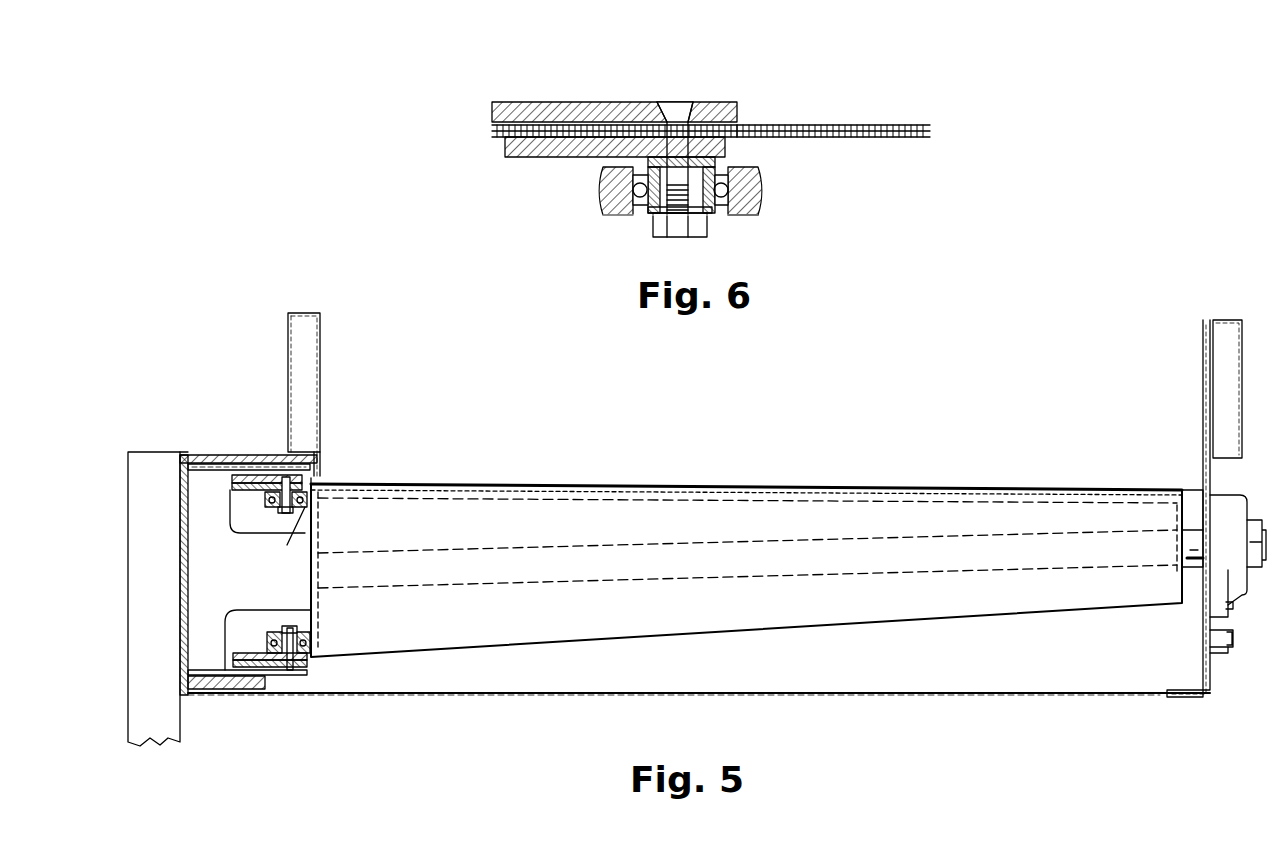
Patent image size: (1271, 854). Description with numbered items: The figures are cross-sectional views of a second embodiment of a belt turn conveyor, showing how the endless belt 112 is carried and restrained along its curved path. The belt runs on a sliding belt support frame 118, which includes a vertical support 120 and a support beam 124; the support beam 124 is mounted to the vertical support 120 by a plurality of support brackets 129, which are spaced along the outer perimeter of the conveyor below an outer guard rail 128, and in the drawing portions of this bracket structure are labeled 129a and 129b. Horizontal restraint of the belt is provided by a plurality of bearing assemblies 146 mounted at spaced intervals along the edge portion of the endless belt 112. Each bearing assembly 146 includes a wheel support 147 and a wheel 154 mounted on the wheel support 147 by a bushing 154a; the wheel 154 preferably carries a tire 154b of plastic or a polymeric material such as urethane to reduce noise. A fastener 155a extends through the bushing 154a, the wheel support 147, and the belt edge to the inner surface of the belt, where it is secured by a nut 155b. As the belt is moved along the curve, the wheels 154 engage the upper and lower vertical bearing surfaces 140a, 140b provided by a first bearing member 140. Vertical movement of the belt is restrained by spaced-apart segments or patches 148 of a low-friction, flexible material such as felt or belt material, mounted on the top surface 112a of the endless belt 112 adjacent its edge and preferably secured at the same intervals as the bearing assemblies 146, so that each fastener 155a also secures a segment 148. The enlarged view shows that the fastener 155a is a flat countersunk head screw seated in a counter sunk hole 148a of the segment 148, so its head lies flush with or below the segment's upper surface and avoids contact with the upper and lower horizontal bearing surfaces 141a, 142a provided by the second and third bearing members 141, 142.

In FIG. 6, the endless belt 112 is at (880, 124).
In FIG. 5, the endless belt 112 is at (748, 482).
In FIG. 6, the top surface of endless belt 112a is at (750, 124).
In FIG. 5, the top surface of endless belt 112a is at (570, 484).
In FIG. 5, the sliding belt support frame 118 is at (160, 450).
In FIG. 5, the vertical support 120 is at (140, 520).
In FIG. 5, the support beam 124 is at (889, 497).
In FIG. 5, the outer guard rail 128 is at (320, 370).
In FIG. 5, the support bracket 129 is at (212, 486).
In FIG. 5, the frame corner 129a is at (318, 480).
In FIG. 5, the frame bottom plate 129b is at (215, 655).
In FIG. 5, the first bearing member 140 is at (320, 560).
In FIG. 5, the upper vertical bearing surface 140a is at (313, 540).
In FIG. 5, the lower vertical bearing surface 140b is at (313, 606).
In FIG. 5, the second bearing member 141 is at (320, 460).
In FIG. 5, the upper horizontal bearing surface 141a is at (252, 470).
In FIG. 5, the third bearing member 142 is at (305, 679).
In FIG. 5, the lower horizontal bearing surface 142a is at (310, 663).
In FIG. 6, the bearing assembly 146 is at (636, 251).
In FIG. 5, the bearing assembly 146 is at (255, 505).
In FIG. 6, the wheel support 147 is at (557, 158).
In FIG. 6, the segment or patch 148 is at (597, 102).
In FIG. 6, the counter sunk hole 148a is at (657, 102).
In FIG. 6, the wheel 154 is at (764, 165).
In FIG. 6, the bushing 154a is at (603, 161).
In FIG. 6, the tire 154b is at (747, 214).
In FIG. 6, the fastener 155a is at (702, 100).
In FIG. 6, the nut 155b is at (697, 237).